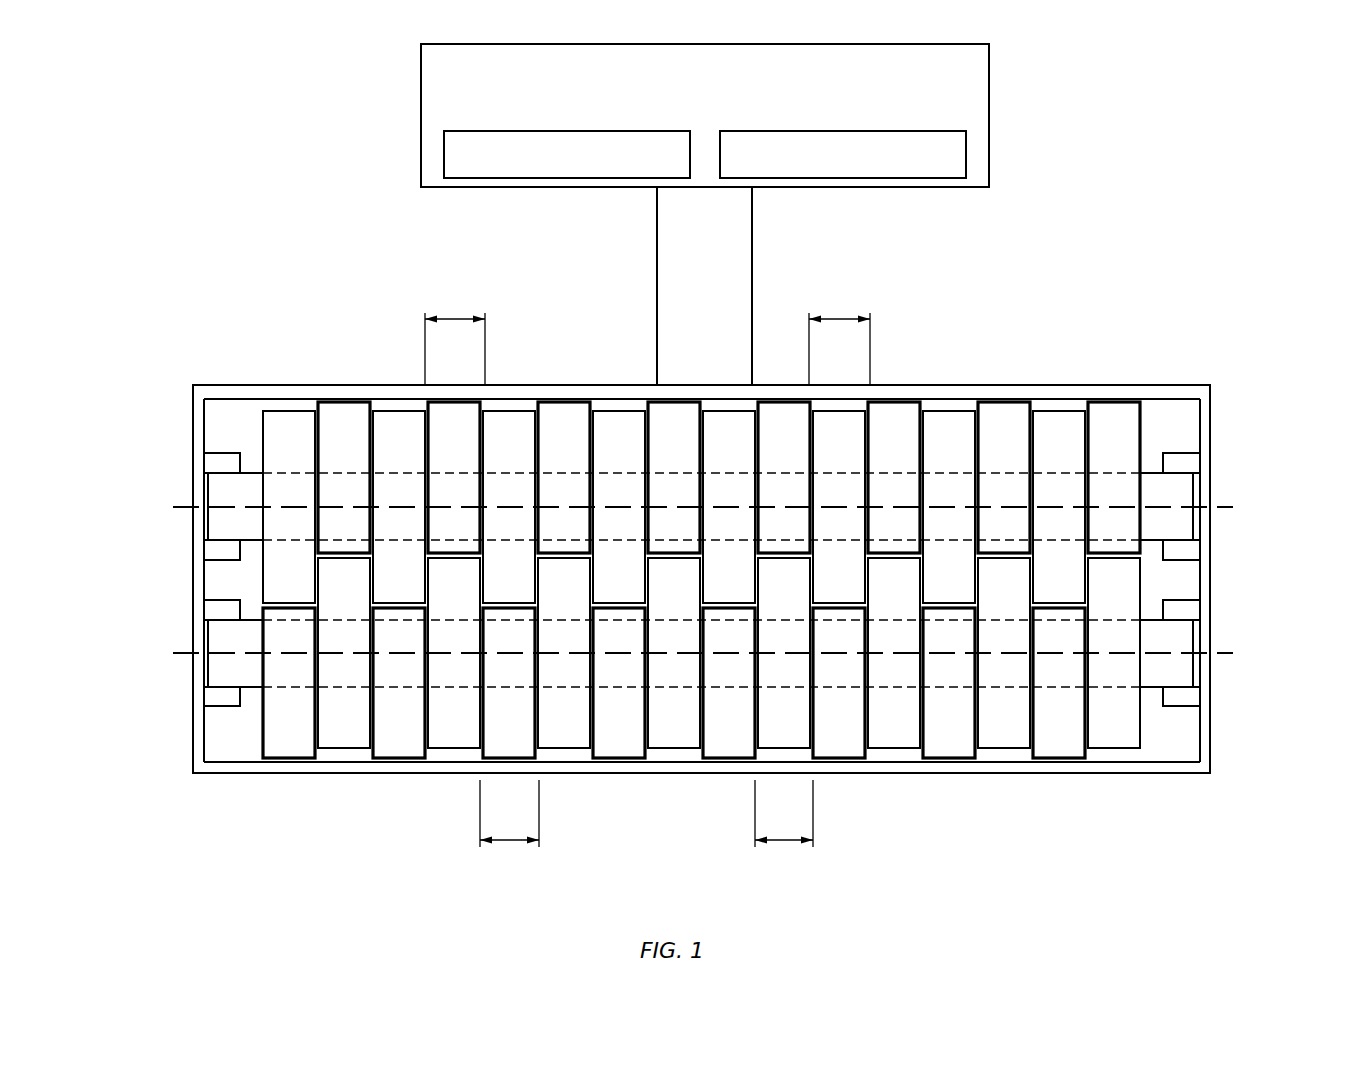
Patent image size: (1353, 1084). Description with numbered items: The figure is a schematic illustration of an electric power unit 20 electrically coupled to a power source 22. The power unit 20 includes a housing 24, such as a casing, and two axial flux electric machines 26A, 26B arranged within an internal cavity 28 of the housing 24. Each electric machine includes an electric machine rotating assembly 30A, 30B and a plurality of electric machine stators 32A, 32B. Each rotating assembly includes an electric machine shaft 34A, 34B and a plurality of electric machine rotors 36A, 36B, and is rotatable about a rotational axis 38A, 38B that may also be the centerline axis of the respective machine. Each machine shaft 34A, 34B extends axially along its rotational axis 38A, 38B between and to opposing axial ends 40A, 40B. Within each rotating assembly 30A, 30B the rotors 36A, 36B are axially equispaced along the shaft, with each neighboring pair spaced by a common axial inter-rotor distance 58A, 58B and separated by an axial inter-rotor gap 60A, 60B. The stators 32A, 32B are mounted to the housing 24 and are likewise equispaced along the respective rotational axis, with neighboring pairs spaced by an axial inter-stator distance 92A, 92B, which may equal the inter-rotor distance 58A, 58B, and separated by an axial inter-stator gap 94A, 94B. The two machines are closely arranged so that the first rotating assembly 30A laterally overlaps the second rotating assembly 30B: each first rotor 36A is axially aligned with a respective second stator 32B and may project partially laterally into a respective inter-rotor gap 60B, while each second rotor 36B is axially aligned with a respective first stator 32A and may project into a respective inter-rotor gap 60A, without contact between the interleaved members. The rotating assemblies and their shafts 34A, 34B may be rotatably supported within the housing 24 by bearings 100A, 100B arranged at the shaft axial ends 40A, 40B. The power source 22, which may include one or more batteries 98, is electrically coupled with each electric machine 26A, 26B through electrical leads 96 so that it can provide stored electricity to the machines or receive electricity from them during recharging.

The electric power unit 20 is at (1198, 342).
The power source 22 is at (691, 115).
The housing 24 is at (1123, 385).
The first axial flux electric machine 26A is at (240, 425).
The second axial flux electric machine 26B is at (240, 735).
The internal cavity 28 is at (243, 752).
The first electric machine rotating assembly 30A is at (260, 458).
The second electric machine rotating assembly 30B is at (1168, 737).
The first electric machine stators 32A is at (327, 451).
The second electric machine stators 32B is at (272, 742).
The first electric machine shaft 34A is at (218, 493).
The second electric machine shaft 34B is at (218, 642).
The first electric machine rotors 36A is at (272, 457).
The second electric machine rotors 36B is at (327, 726).
The first rotational axis 38A is at (1226, 507).
The second rotational axis 38B is at (1226, 653).
The first axial end 40A is at (207, 527).
The second axial end 40B is at (207, 672).
The first axial inter-rotor distance 58A is at (455, 318).
The second axial inter-rotor distance 58B is at (510, 847).
The first axial inter-rotor gap 60A is at (482, 408).
The second axial inter-rotor gap 60B is at (482, 756).
The first axial inter-stator distance 92A is at (838, 318).
The second axial inter-stator distance 92B is at (783, 847).
The first axial inter-stator gap 94A is at (861, 404).
The second axial inter-stator gap 94B is at (766, 763).
The electrical leads 96 is at (752, 315).
The batteries 98 is at (554, 169).
The first bearings 100A is at (203, 463).
The second bearings 100B is at (203, 698).